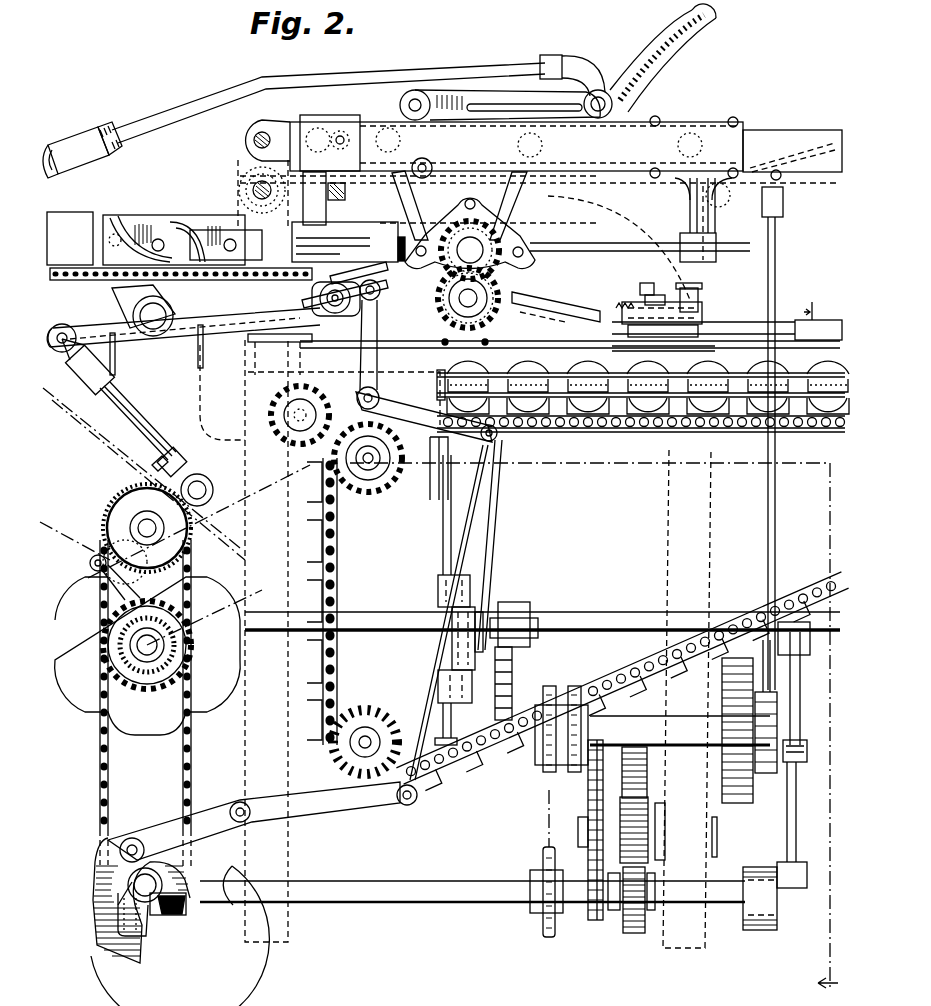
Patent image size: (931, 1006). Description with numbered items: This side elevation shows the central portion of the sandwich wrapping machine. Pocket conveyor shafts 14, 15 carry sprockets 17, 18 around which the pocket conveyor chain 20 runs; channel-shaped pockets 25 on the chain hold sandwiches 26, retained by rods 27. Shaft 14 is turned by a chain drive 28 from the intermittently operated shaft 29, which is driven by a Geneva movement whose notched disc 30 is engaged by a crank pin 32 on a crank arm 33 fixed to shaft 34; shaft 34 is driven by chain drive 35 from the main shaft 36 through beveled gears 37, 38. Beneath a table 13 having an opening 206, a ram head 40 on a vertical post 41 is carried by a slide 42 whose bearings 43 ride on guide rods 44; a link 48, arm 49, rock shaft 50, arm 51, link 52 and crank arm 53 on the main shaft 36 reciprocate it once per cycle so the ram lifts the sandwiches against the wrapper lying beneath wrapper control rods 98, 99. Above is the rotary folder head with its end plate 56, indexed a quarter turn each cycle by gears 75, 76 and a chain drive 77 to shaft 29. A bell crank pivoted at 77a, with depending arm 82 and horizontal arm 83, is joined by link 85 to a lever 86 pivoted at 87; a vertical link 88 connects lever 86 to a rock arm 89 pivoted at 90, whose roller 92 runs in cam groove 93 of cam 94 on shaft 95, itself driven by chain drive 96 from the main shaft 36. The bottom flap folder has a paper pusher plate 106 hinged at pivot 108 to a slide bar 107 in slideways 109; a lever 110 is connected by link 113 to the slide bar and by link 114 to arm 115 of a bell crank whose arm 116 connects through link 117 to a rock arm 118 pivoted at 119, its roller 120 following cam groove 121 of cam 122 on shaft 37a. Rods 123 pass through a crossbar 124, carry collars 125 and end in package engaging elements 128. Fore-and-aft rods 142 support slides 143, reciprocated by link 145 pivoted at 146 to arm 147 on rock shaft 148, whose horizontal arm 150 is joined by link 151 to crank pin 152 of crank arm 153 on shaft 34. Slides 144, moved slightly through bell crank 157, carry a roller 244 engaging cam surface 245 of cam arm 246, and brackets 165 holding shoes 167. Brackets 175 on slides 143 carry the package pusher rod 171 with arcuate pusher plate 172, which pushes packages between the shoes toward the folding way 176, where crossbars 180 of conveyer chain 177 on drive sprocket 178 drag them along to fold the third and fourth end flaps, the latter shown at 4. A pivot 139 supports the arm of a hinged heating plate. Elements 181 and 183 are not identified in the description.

The fourth end flap 4 is at (821, 734).
The table 13 is at (640, 347).
The pocket conveyor shaft 14 is at (386, 487).
The pocket conveyor shaft 15 is at (366, 721).
The sprocket 17 is at (403, 518).
The sprocket 18 is at (388, 713).
The pocket conveyor chain 20 is at (628, 440).
The article-receiving pockets 25 is at (733, 435).
The sandwiches 26 is at (810, 381).
The rods 27 is at (730, 393).
The chain drive 28 is at (345, 519).
The intermittently operated shaft 29 is at (147, 645).
The notched disc 30 is at (78, 648).
The crank pin 32 is at (90, 565).
The crank arm 33 is at (100, 536).
The shaft 34 is at (112, 517).
The chain drive 35 is at (100, 753).
The main shaft 36 is at (318, 896).
The beveled gear 37 is at (170, 918).
The shaft 37a is at (140, 881).
The beveled gear 38 is at (168, 916).
The ram head 40 is at (470, 456).
The vertical post 41 is at (480, 479).
The slide 42 is at (476, 611).
The bearings 43 is at (472, 583).
The vertical guide rods 44 is at (442, 563).
The link 48 is at (503, 669).
The arm 49 is at (522, 605).
The rock shaft 50 is at (576, 623).
The arm 51 is at (801, 677).
The link 52 is at (797, 804).
The crank arm 53 is at (775, 899).
The end plate 56 is at (476, 216).
The gear 75 is at (508, 264).
The gear 76 is at (505, 305).
The chain drive 77 is at (240, 450).
The bell crank pivot 77a is at (504, 140).
The depending arm 82 is at (512, 209).
The horizontal arm 83 is at (540, 199).
The link 85 is at (634, 155).
The lever 86 is at (674, 194).
The pivot 87 is at (707, 122).
The vertical link 88 is at (777, 248).
The rock arm 89 is at (777, 720).
The pivot 90 is at (805, 745).
The roller 92 is at (750, 783).
The cam groove 93 is at (740, 801).
The cam 94 is at (698, 831).
The shaft 95 is at (626, 736).
The chain drive 96 is at (546, 813).
The wrapper control rod 98 is at (443, 342).
The wrapper control rod 99 is at (488, 342).
The paper pusher plate 106 is at (542, 329).
The slide bar 107 is at (828, 304).
The pivot 108 is at (651, 309).
The slideways 109 is at (725, 346).
The lever 110 is at (642, 291).
The link 113 is at (700, 301).
The link 114 is at (582, 311).
The upwardly extending arm 115 is at (303, 387).
The horizontal arm 116 is at (412, 419).
The link 117 is at (432, 657).
The rock arm 118 is at (315, 809).
The pivot 119 is at (238, 803).
The roller 120 is at (100, 873).
The cam groove 121 is at (105, 946).
The cam 122 is at (118, 969).
The rods 123 is at (782, 320).
The crossbar 124 is at (814, 338).
The collars 125 is at (815, 335).
The package engaging elements 128 is at (555, 303).
The pivot 139 is at (252, 189).
The fore-and-aft extending rods 142 is at (760, 138).
The slides 143 is at (667, 130).
The slides 144 is at (318, 118).
The link 145 is at (441, 70).
The pivot 146 is at (600, 90).
The arm 147 is at (86, 168).
The rock shaft 148 is at (176, 313).
The horizontal arm 150 is at (134, 349).
The link 151 is at (130, 407).
The crank pin 152 is at (392, 119).
The crank arm 153 is at (210, 489).
The bell crank 157 is at (700, 50).
The brackets 165 is at (348, 193).
The stationary shoes 167 is at (350, 242).
The package pusher rod 171 is at (650, 243).
The arcuate pusher plate 172 is at (538, 231).
The brackets 175 is at (688, 214).
The folding way 176 is at (158, 232).
The conveyer chain 177 is at (266, 284).
The drive sprocket 178 is at (310, 304).
The crossbars 180 is at (204, 352).
The hopper 181 is at (70, 224).
The center line 183 is at (92, 437).
The opening 206 is at (440, 353).
The roller 244 is at (292, 120).
The cam surface 245 is at (314, 198).
The cam arm 246 is at (414, 214).